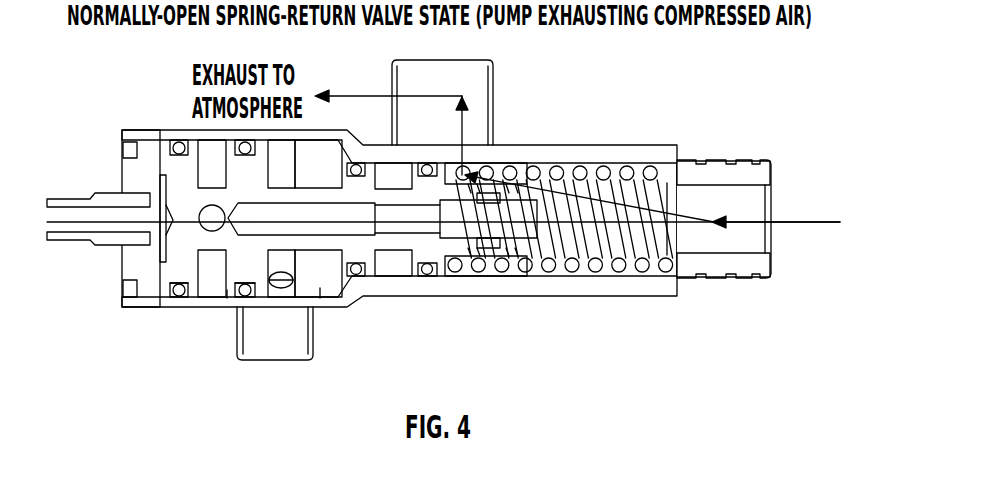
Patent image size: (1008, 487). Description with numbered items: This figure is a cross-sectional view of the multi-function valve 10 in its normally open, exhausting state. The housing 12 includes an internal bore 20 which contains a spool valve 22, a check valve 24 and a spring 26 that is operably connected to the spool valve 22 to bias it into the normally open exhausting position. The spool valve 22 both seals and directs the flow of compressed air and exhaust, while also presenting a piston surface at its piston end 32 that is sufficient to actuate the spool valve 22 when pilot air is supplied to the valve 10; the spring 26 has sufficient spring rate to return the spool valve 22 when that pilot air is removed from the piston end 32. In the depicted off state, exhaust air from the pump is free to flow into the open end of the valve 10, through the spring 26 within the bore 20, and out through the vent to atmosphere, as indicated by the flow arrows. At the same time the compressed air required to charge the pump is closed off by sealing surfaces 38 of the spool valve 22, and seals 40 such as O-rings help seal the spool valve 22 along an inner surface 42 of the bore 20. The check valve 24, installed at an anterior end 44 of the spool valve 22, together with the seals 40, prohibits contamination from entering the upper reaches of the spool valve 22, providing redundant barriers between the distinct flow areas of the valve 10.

The multi-function valve 10 is at (815, 145).
The housing 12 is at (562, 296).
The internal bore 20 is at (392, 272).
The spool valve 22 is at (122, 298).
The check valve 24 is at (530, 146).
The spring 26 is at (618, 275).
The piston end 32 is at (133, 258).
The sealing surfaces 38 is at (227, 303).
The seals 40 is at (247, 305).
The inner surface 42 is at (322, 290).
The anterior end 44 is at (473, 255).